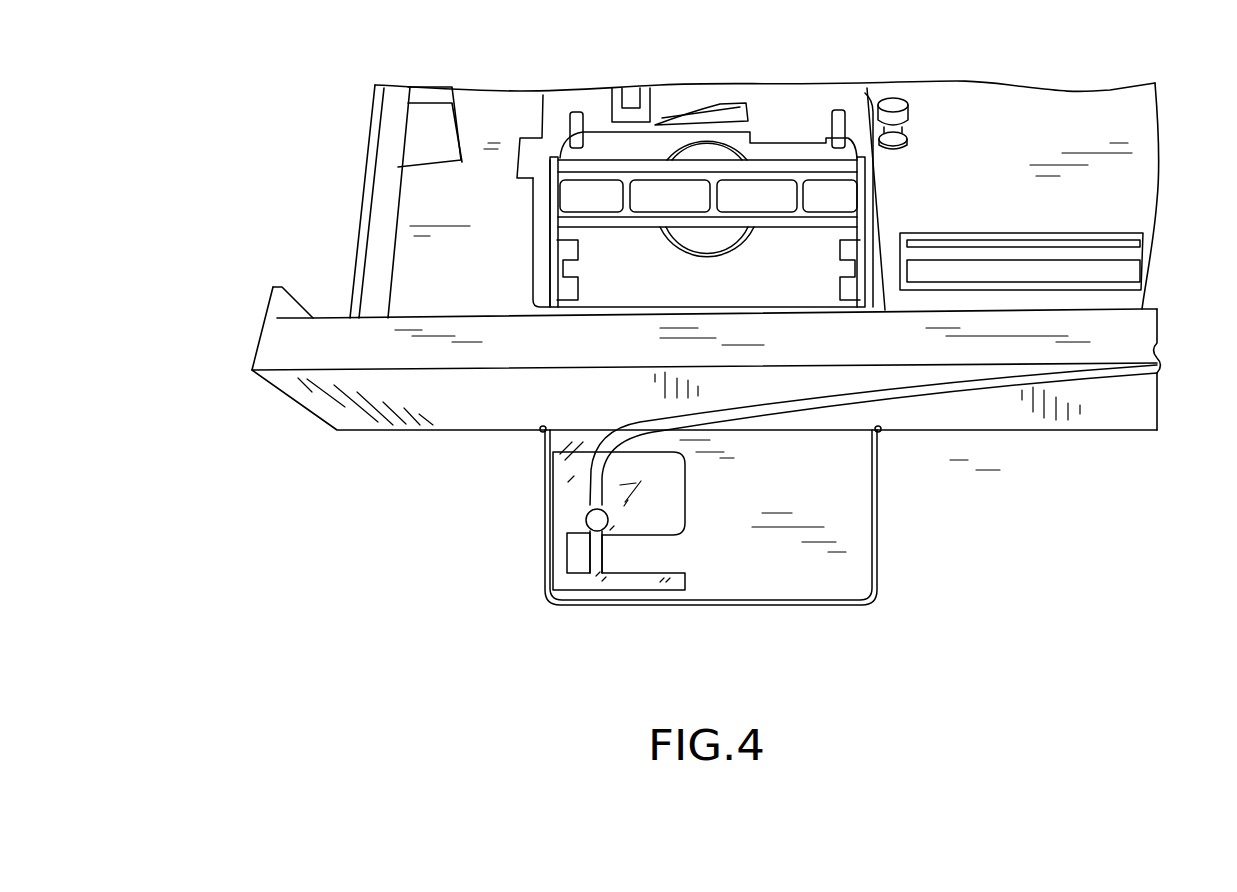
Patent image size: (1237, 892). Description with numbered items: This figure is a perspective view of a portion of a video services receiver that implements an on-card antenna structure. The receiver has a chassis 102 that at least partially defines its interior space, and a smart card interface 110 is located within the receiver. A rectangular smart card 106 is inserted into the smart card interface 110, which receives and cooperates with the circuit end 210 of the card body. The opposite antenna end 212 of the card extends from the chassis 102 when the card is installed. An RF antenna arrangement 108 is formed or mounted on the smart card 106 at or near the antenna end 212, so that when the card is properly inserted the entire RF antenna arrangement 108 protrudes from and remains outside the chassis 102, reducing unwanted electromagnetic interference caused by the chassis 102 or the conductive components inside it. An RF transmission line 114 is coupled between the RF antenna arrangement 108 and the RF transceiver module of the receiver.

The chassis 102 is at (499, 100).
The circuit end 210 is at (598, 102).
The smart card interface 110 is at (550, 197).
The smart card 106 is at (650, 277).
The RF transmission line 114 is at (835, 397).
The RF antenna arrangement 108 is at (710, 490).
The antenna end 212 is at (928, 494).